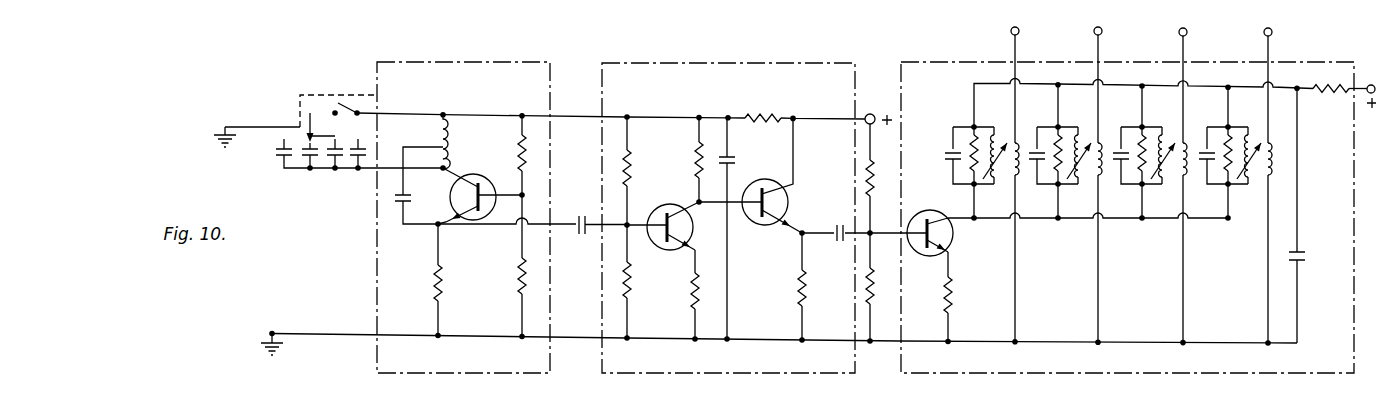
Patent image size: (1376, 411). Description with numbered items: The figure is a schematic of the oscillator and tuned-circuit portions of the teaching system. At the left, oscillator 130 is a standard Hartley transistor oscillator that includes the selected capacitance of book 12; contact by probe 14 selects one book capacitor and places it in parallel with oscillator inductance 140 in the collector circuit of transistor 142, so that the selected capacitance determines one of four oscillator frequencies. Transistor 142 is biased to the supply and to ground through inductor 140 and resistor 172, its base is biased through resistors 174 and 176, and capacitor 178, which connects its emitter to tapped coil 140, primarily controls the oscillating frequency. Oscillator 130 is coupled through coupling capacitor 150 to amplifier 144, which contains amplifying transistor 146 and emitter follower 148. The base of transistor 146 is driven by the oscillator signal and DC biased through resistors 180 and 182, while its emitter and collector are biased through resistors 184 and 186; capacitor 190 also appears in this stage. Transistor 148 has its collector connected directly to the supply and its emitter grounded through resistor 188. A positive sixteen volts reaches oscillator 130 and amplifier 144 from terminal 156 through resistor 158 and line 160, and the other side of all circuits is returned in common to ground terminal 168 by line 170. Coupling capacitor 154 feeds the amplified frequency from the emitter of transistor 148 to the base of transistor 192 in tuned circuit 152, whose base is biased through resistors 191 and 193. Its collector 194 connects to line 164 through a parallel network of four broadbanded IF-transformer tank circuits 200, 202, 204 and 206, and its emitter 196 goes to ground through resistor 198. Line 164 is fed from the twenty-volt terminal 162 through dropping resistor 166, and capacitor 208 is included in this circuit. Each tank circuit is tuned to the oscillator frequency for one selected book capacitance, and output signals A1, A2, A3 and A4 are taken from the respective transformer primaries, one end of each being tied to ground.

The book 12 is at (320, 171).
The probe 14 is at (310, 113).
The oscillator 130 is at (503, 62).
The oscillator inductance 140 is at (447, 136).
The oscillator transistor 142 is at (482, 180).
The amplifier 144 is at (678, 61).
The amplifying transistor 146 is at (656, 249).
The emitter follower 148 is at (758, 224).
The coupling capacitor 150 is at (581, 215).
The tuned circuit 152 is at (958, 59).
The coupling capacitor 154 is at (842, 238).
The terminal 156 is at (877, 104).
The resistor 158 is at (770, 117).
The line 160 is at (668, 116).
The terminal 162 is at (1369, 85).
The line 164 is at (1150, 58).
The dropping resistor 166 is at (1332, 85).
The ground terminal 168 is at (275, 331).
The line 170 is at (871, 345).
The resistor 172 is at (436, 288).
The resistor 174 is at (519, 279).
The resistor 176 is at (519, 150).
The capacitor 178 is at (400, 207).
The resistor 180 is at (632, 164).
The resistor 182 is at (625, 277).
The resistor 184 is at (697, 162).
The resistor 186 is at (692, 290).
The resistor 188 is at (804, 297).
The capacitor 190 is at (737, 162).
The resistor 191 is at (866, 177).
The transistor 192 is at (953, 237).
The resistor 193 is at (884, 288).
The collector 194 is at (932, 211).
The emitter 196 is at (940, 256).
The resistor 198 is at (954, 298).
The tank circuit 200 is at (965, 122).
The tank circuit 202 is at (1049, 122).
The tank circuit 204 is at (1133, 122).
The tank circuit 206 is at (1219, 122).
The capacitor 208 is at (1302, 258).
The signal A1 is at (1011, 32).
The signal A2 is at (1094, 32).
The signal A3 is at (1179, 33).
The signal A4 is at (1264, 33).